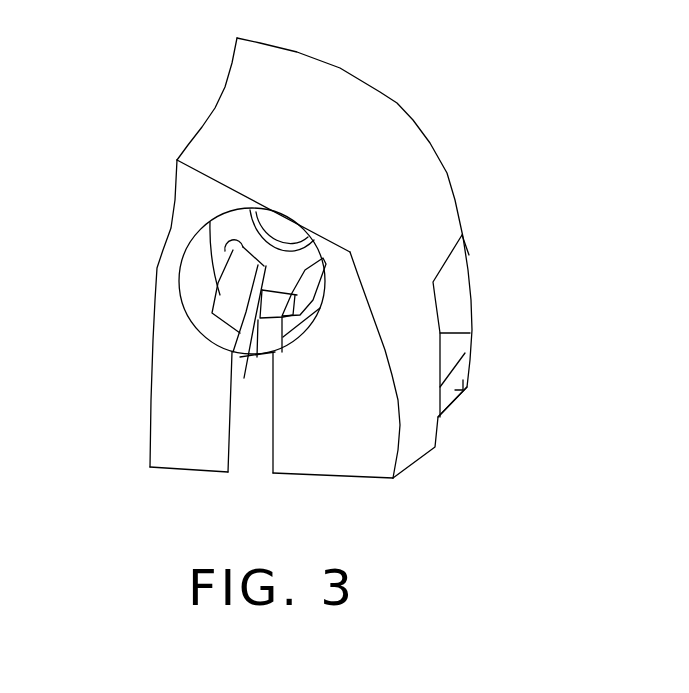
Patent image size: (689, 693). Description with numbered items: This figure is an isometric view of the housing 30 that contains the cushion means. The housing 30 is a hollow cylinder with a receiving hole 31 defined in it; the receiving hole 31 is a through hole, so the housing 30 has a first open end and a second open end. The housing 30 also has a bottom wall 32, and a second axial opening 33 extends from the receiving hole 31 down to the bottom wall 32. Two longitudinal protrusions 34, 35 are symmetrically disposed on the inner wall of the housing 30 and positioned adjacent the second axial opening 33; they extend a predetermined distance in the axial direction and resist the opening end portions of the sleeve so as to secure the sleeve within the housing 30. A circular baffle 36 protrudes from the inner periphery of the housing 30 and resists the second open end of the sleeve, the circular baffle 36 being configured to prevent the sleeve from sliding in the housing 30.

The housing 30 is at (363, 137).
The receiving hole 31 is at (194, 263).
The bottom wall 32 is at (335, 477).
The second axial opening 33 is at (257, 437).
The longitudinal protrusion 34 is at (237, 285).
The longitudinal protrusion 35 is at (422, 256).
The circular baffle 36 is at (238, 227).